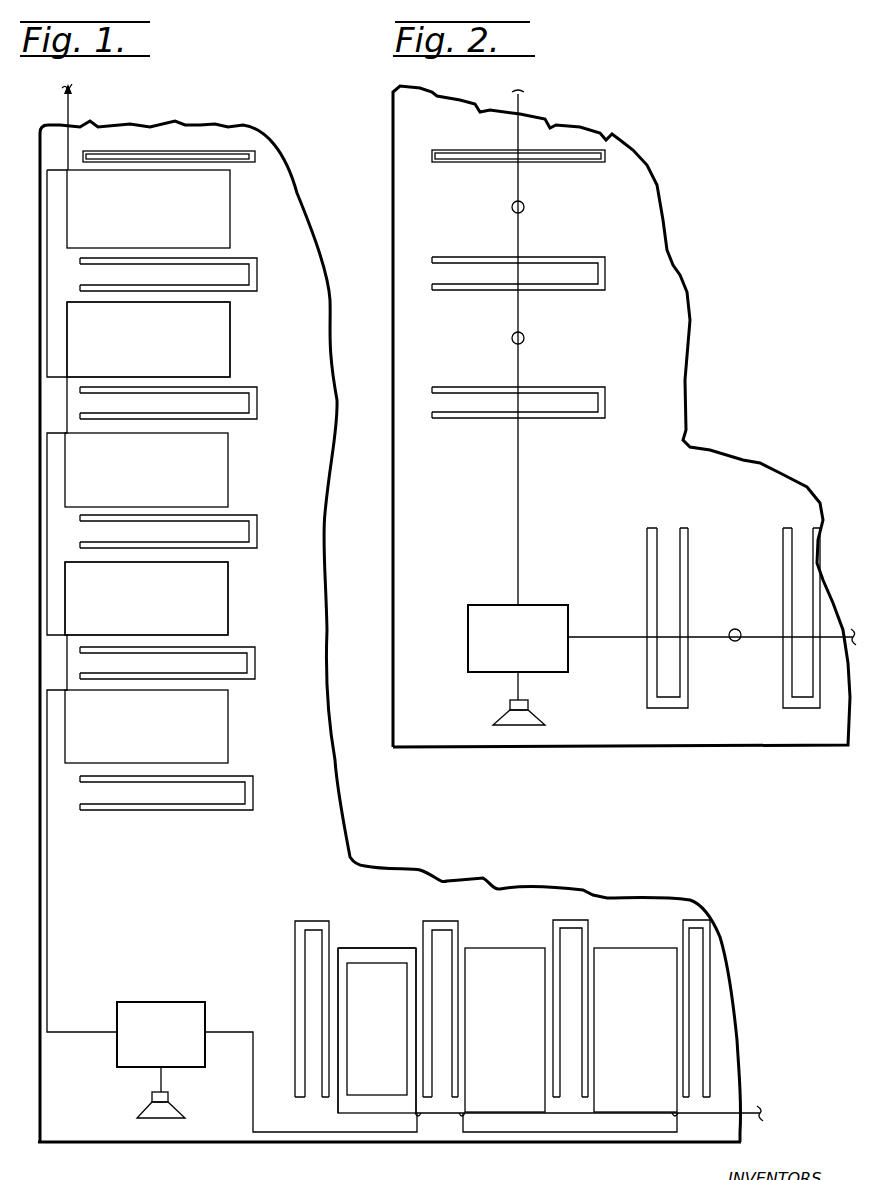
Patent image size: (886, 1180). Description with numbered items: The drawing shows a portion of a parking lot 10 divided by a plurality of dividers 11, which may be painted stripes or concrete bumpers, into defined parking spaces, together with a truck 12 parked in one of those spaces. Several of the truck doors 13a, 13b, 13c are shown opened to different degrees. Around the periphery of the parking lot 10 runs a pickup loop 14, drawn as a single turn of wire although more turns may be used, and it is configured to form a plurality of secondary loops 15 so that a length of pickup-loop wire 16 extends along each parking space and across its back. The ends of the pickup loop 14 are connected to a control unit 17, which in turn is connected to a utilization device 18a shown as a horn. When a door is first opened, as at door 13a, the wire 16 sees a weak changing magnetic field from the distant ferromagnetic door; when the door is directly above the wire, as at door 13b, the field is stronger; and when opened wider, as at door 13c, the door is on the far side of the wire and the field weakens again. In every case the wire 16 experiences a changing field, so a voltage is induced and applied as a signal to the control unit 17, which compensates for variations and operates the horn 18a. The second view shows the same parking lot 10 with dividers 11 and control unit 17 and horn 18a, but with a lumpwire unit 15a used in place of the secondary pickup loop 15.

In FIG. 1, the parking lot 10 is at (360, 850).
In FIG. 2, the parking lot 10 is at (722, 446).
In FIG. 1, the dividers 11 is at (258, 147).
In FIG. 2, the dividers 11 is at (600, 164).
In FIG. 1, the truck 12 is at (388, 1031).
In FIG. 1, the truck door 13a is at (341, 1052).
In FIG. 1, the truck door 13b is at (393, 962).
In FIG. 1, the truck door 13c is at (408, 1008).
In FIG. 1, the pickup loop 14 is at (36, 327).
In FIG. 1, the secondary loops 15 is at (241, 310).
In FIG. 2, the lumpwire unit 15a is at (512, 207).
In FIG. 1, the pickup-loop wire 16 is at (230, 342).
In FIG. 1, the control unit 17 is at (157, 1002).
In FIG. 2, the control unit 17 is at (558, 607).
In FIG. 1, the utilization device 18a is at (146, 1105).
In FIG. 2, the utilization device 18a is at (561, 698).